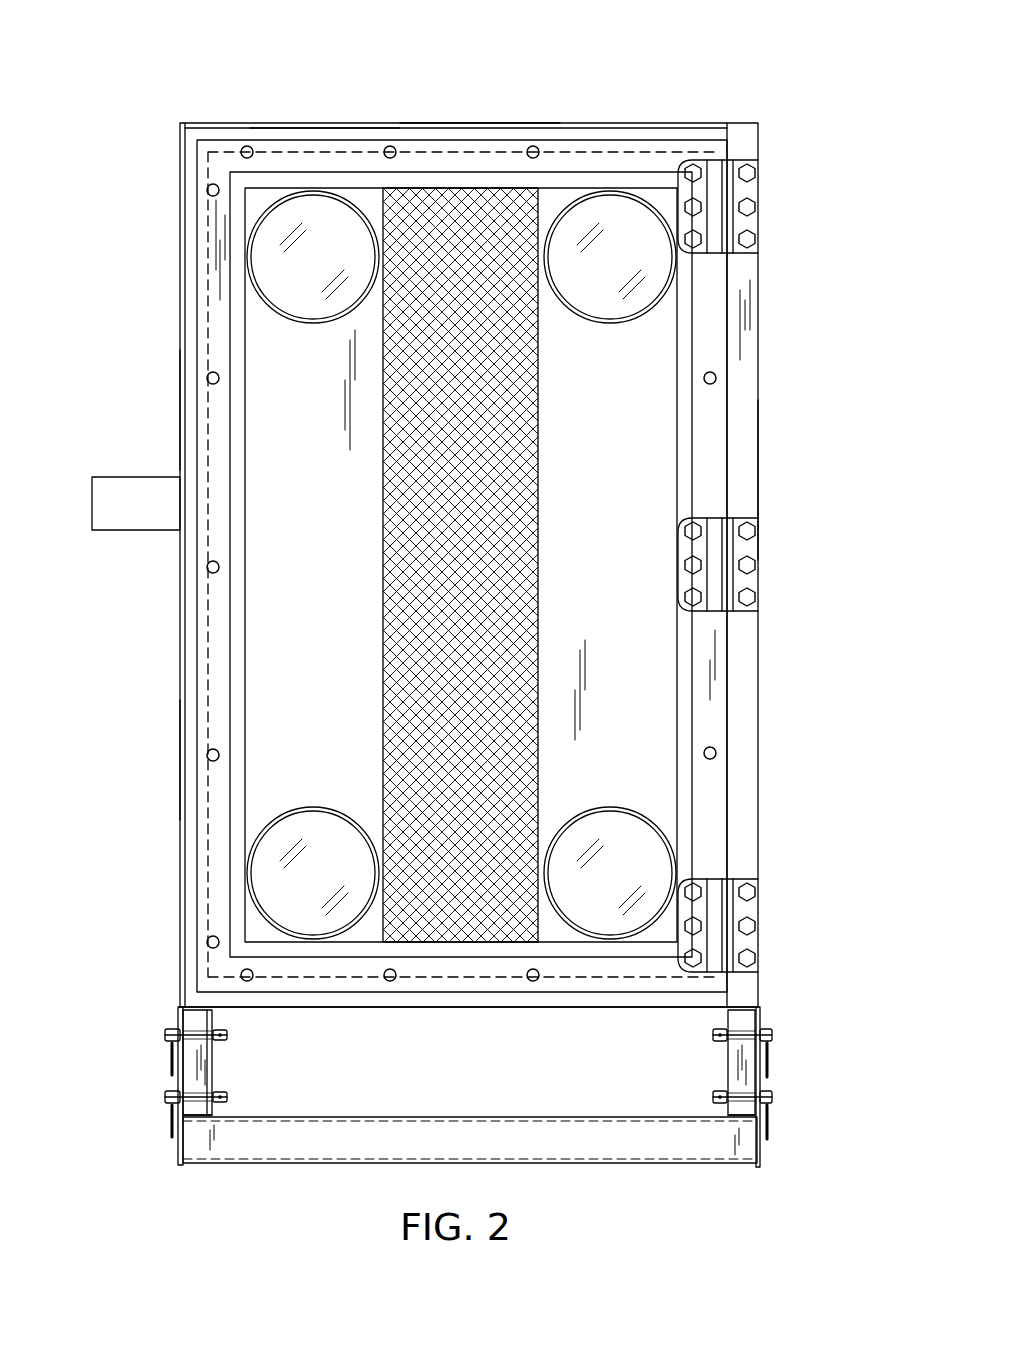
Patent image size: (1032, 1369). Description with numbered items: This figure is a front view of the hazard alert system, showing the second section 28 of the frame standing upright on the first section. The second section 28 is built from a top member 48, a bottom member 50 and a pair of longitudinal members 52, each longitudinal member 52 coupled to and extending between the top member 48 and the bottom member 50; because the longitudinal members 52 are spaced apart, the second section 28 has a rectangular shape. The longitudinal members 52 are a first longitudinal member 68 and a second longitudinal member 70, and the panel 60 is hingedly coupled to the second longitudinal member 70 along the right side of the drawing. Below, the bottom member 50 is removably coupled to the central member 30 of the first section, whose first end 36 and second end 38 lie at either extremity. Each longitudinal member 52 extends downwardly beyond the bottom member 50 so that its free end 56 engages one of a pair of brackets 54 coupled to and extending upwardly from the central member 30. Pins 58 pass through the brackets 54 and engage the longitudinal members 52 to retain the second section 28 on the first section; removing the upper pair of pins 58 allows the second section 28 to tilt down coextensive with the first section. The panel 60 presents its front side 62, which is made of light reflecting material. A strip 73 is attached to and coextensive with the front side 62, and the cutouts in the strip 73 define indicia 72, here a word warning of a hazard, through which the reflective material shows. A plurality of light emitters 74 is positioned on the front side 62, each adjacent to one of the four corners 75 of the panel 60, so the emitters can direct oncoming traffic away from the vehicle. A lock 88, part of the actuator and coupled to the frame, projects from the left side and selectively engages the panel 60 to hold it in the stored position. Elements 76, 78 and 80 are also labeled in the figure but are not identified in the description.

The second section 28 is at (768, 302).
The central member 30 is at (615, 1162).
The first end 36 is at (758, 1160).
The second end 38 is at (178, 1155).
The top member 48 is at (495, 125).
The bottom member 50 is at (353, 1008).
The longitudinal members 52 is at (180, 408).
The brackets 54 is at (767, 1057).
The free end 56 is at (195, 1115).
The pins 58 is at (772, 1035).
The panel 60 is at (205, 660).
The front side 62 is at (270, 615).
The first longitudinal member 68 is at (180, 754).
The second longitudinal member 70 is at (758, 700).
The indicia 72 is at (458, 213).
The strips 73 is at (528, 215).
The light emitters 74 is at (628, 828).
The corners 75 is at (255, 188).
The sign panel arrow 76 is at (366, 332).
The top frame 78 is at (355, 128).
The bottom cross member 80 is at (500, 1007).
The latch 88 is at (90, 518).